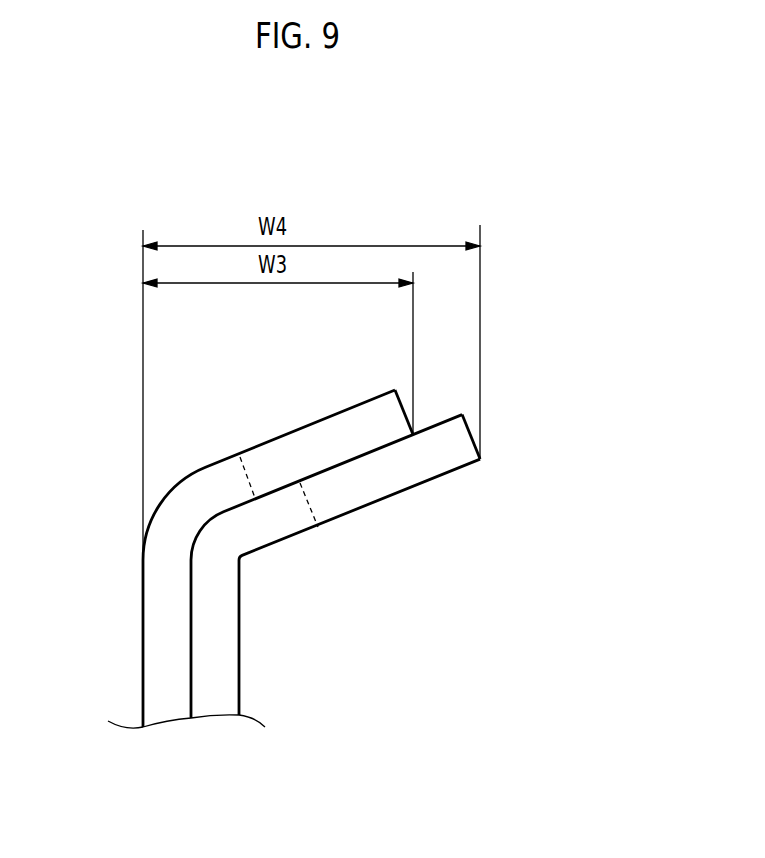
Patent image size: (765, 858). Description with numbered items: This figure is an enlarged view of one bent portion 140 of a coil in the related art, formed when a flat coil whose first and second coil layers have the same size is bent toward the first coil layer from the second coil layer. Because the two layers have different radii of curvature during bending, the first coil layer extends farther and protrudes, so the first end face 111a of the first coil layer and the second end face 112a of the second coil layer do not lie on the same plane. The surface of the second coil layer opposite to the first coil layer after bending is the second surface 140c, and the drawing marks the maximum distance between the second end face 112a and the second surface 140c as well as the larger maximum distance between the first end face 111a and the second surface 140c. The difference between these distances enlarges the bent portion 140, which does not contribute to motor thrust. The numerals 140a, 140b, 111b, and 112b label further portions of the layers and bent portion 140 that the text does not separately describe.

The bent portion 140 is at (308, 511).
The inner surface of connecting pipe 140a is at (246, 561).
The intermediate boundary surface of connecting pipe 140b is at (205, 531).
The second surface 140c is at (160, 507).
The first end face 111a is at (477, 442).
The hidden line (groove) of first member 111b is at (311, 510).
The second end face 112a is at (403, 410).
The hidden line (groove) of second member 112b is at (248, 478).